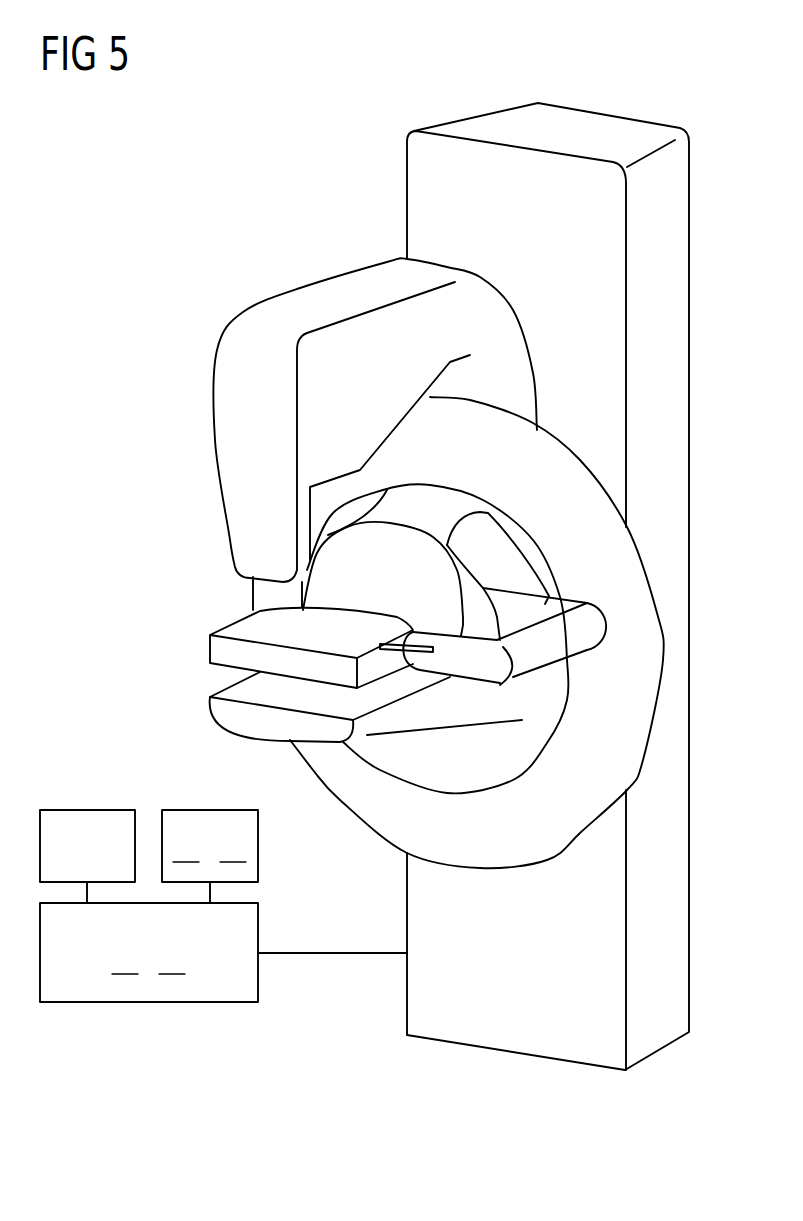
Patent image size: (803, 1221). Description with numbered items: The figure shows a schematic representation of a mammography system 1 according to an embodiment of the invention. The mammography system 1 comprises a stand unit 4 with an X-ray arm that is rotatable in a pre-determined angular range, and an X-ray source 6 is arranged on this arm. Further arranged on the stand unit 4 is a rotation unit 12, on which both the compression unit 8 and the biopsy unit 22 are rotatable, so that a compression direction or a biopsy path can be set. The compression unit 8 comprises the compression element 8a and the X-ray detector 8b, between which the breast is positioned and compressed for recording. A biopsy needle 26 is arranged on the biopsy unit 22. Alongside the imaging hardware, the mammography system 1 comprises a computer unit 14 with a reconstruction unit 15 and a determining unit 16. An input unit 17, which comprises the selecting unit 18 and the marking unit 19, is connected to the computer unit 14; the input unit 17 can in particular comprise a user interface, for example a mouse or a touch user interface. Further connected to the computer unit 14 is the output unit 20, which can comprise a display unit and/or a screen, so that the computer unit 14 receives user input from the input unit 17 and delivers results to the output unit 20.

The mammography system 1 is at (205, 237).
The stand unit 4 is at (682, 370).
The X-ray source 6 is at (242, 567).
The compression unit 8 is at (155, 672).
The compression element 8a is at (210, 648).
The X-ray detector 8b is at (210, 703).
The rotation unit 12 is at (558, 462).
The computer unit 14 is at (258, 932).
The reconstruction unit 15 is at (125, 959).
The determining unit 16 is at (172, 959).
The input unit 17 is at (210, 808).
The selecting unit 18 is at (186, 847).
The marking unit 19 is at (233, 847).
The output unit 20 is at (87, 808).
The biopsy unit 22 is at (573, 640).
The biopsy needle 26 is at (397, 637).